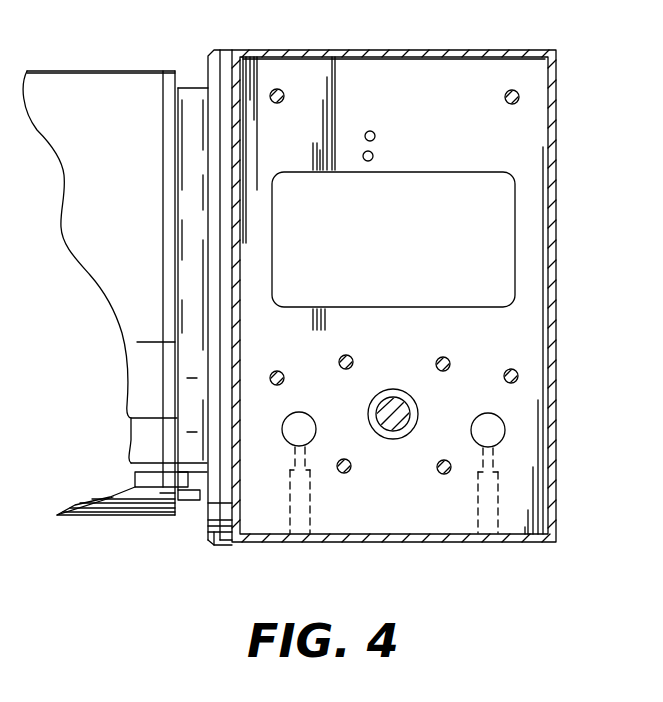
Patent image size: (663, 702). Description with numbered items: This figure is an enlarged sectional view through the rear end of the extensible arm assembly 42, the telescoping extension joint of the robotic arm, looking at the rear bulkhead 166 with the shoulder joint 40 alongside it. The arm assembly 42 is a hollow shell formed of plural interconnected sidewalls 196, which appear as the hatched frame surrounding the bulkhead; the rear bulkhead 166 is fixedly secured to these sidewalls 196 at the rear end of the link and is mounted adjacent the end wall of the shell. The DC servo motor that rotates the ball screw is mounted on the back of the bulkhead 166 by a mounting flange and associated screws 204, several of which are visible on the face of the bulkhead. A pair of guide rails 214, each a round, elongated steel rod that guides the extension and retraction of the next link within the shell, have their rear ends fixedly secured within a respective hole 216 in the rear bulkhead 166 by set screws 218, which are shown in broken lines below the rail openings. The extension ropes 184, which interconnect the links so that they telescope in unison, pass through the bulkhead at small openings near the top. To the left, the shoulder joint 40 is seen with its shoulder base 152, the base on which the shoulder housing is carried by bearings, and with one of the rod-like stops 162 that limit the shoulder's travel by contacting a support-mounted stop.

The shoulder joint 40 is at (142, 98).
The extensible arm assembly 42 is at (347, 84).
The shoulder base 152 is at (223, 58).
The rod-like stops 162 is at (152, 482).
The rear bulkhead 166 is at (532, 340).
The extension ropes 184 is at (372, 151).
The sidewalls 196 is at (412, 49).
The screws 204 is at (435, 363).
The guide rails 214 is at (474, 430).
The hole 216 is at (477, 467).
The set screws 218 is at (457, 490).